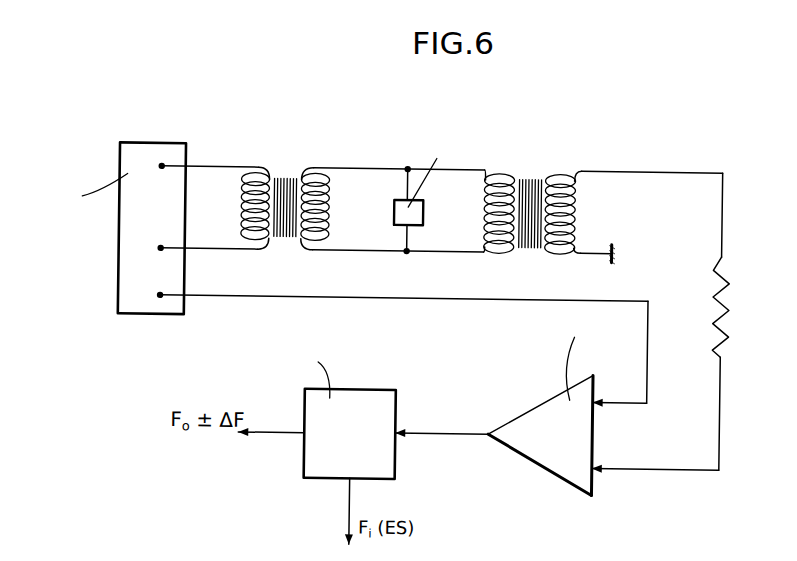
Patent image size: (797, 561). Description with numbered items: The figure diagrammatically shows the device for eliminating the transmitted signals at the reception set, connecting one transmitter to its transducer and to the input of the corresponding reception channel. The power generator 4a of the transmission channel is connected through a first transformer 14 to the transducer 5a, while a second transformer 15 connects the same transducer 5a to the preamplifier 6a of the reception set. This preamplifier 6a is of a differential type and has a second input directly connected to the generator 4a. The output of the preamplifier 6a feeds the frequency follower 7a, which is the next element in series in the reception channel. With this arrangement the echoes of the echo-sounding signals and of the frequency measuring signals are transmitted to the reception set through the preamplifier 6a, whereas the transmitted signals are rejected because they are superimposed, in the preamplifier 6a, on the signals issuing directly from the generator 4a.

The power generator 4a is at (168, 145).
The transformer 14 is at (281, 175).
The transducer 5a is at (402, 200).
The transformer 15 is at (530, 171).
The preamplifier 6a is at (534, 407).
The frequency follower 7a is at (377, 389).